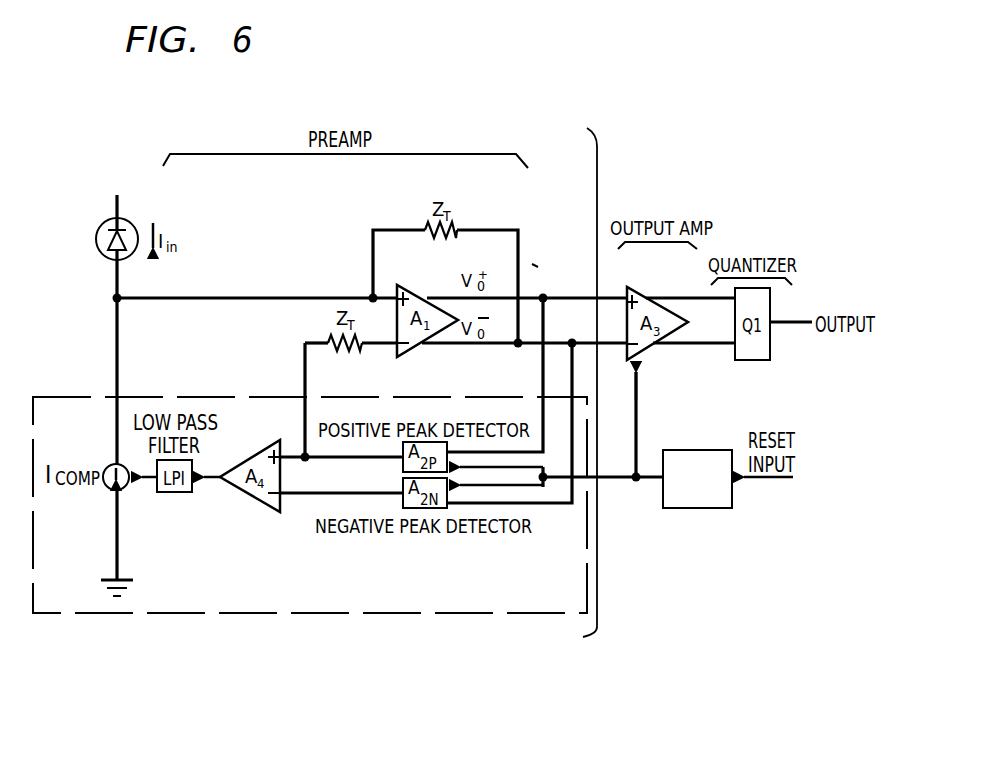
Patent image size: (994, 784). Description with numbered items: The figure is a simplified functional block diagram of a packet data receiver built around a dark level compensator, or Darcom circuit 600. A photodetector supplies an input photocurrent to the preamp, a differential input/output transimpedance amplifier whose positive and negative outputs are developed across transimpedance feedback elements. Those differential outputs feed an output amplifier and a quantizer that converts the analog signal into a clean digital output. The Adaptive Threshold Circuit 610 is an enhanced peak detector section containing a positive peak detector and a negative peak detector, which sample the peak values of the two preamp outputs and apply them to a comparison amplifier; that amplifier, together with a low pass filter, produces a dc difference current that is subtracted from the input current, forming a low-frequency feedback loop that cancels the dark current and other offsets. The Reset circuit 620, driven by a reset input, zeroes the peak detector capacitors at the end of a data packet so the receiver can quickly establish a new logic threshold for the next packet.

The dark level compensator (Darcom) circuit 600 is at (597, 163).
The Adaptive Threshold Circuit 610 is at (579, 616).
The Reset circuit 620 is at (702, 450).